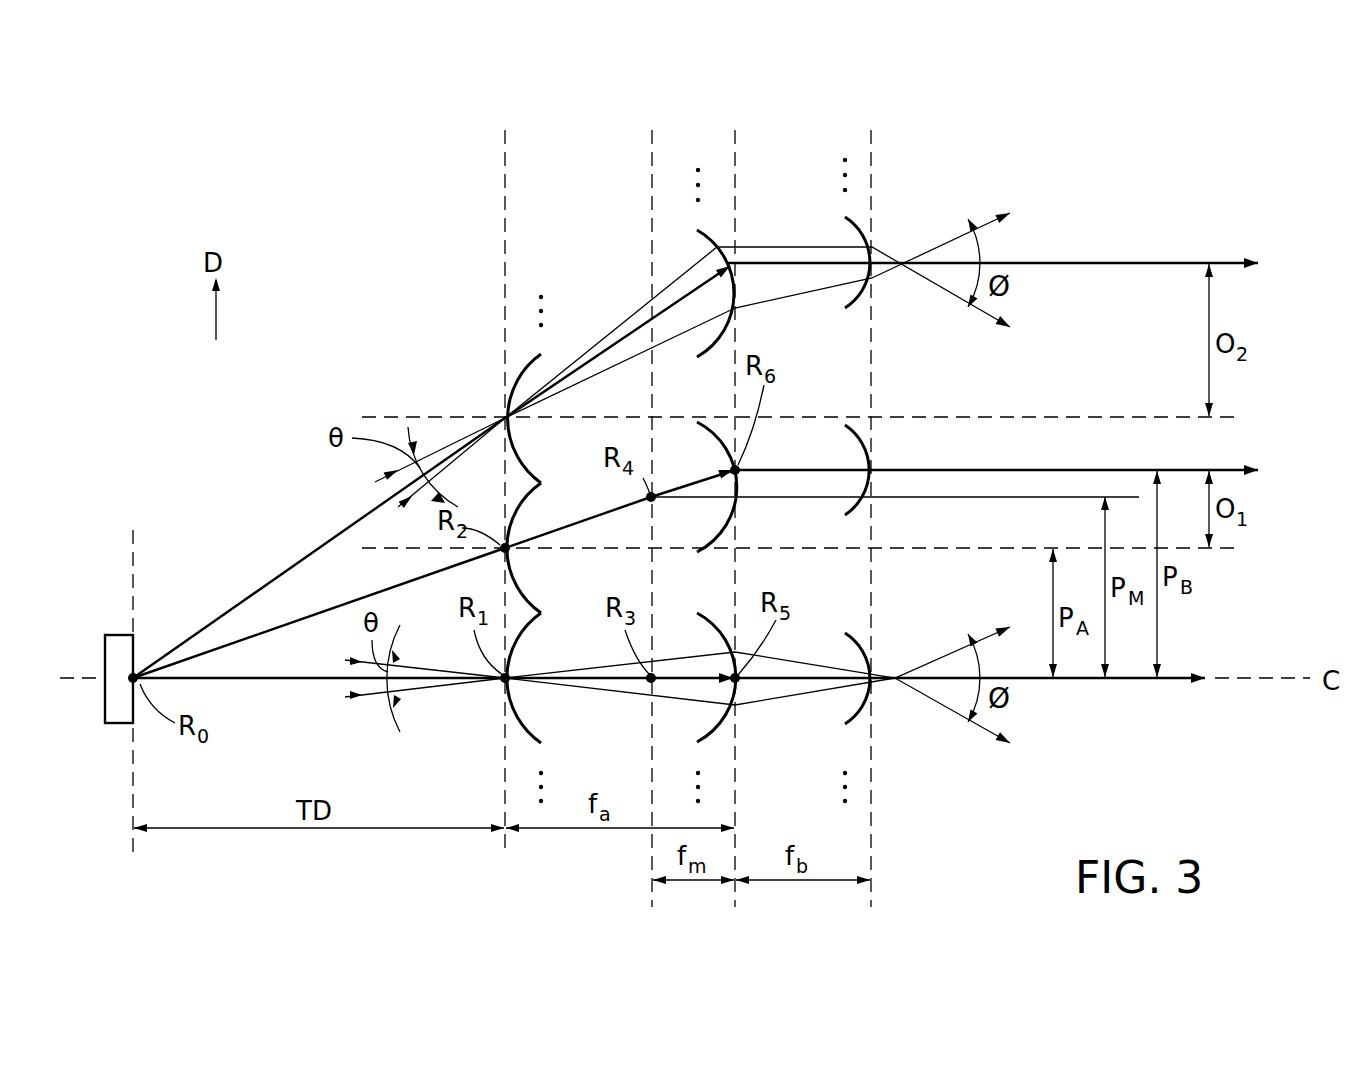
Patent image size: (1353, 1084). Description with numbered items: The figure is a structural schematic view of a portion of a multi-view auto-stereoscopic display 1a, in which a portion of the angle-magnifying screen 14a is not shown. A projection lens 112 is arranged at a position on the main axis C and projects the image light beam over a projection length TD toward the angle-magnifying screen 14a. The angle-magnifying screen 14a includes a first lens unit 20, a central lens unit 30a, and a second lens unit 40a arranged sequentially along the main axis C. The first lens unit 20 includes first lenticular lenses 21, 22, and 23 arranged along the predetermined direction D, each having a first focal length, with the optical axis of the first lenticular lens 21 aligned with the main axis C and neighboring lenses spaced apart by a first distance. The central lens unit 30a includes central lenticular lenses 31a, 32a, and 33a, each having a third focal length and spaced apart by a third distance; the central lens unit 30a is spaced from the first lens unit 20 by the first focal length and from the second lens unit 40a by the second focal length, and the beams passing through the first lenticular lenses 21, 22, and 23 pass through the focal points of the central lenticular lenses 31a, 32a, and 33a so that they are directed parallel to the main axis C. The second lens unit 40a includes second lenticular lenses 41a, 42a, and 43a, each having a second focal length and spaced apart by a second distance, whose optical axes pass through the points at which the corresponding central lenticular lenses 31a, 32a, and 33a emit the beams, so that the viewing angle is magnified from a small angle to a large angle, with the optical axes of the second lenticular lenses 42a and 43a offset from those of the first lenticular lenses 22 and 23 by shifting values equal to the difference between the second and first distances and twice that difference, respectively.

The multi-view auto-stereoscopic display 1a is at (214, 142).
The angle-magnifying screen 14a is at (345, 166).
The projection lens 112 is at (121, 633).
The first lens unit 20 is at (548, 250).
The first lenticular lens 21 is at (540, 725).
The first lenticular lens 22 is at (540, 580).
The first lenticular lens 23 is at (520, 452).
The central lens unit 30a is at (681, 149).
The central lenticular lens 31a is at (720, 728).
The central lenticular lens 32a is at (727, 527).
The central lenticular lens 33a is at (712, 236).
The second lens unit 40a is at (799, 150).
The second lenticular lens 41a is at (860, 735).
The second lenticular lens 42a is at (860, 507).
The second lenticular lens 43a is at (860, 226).